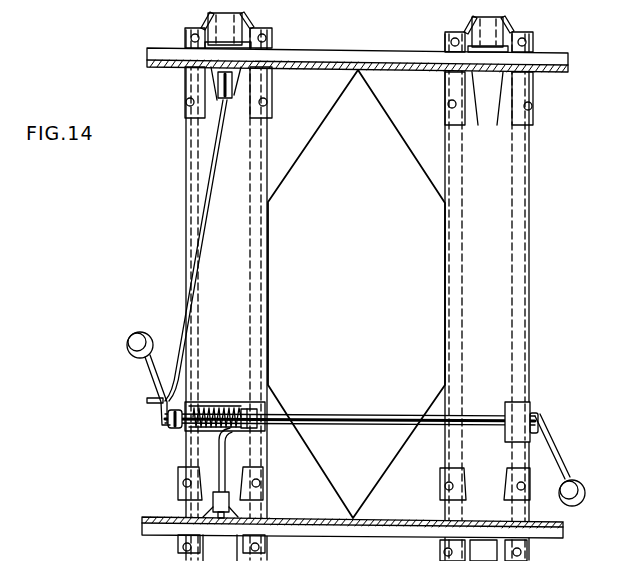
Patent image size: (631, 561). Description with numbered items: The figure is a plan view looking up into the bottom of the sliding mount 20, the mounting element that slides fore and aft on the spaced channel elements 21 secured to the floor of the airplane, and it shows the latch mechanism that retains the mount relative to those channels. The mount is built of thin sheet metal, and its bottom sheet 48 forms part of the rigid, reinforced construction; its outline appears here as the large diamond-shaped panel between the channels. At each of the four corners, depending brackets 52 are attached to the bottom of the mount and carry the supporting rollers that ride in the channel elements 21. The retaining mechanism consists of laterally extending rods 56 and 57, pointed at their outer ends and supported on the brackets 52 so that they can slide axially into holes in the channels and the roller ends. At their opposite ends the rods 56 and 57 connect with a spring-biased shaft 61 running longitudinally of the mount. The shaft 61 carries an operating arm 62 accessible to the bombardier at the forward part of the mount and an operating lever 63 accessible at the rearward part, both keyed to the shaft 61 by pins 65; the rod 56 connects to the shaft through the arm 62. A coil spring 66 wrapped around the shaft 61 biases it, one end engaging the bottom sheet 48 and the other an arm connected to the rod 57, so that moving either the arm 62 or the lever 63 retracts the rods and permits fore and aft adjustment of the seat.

The sliding mount 20 is at (356, 294).
The channel elements 21 is at (165, 52).
The bottom sheet 48 is at (428, 168).
The depending brackets 52 is at (520, 90).
The rod 56 is at (184, 320).
The rod 57 is at (223, 458).
The spring-biased shaft 61 is at (360, 411).
The operating arm 62 is at (150, 381).
The operating lever 63 is at (558, 442).
The pins 65 is at (536, 413).
The coil spring 66 is at (228, 407).